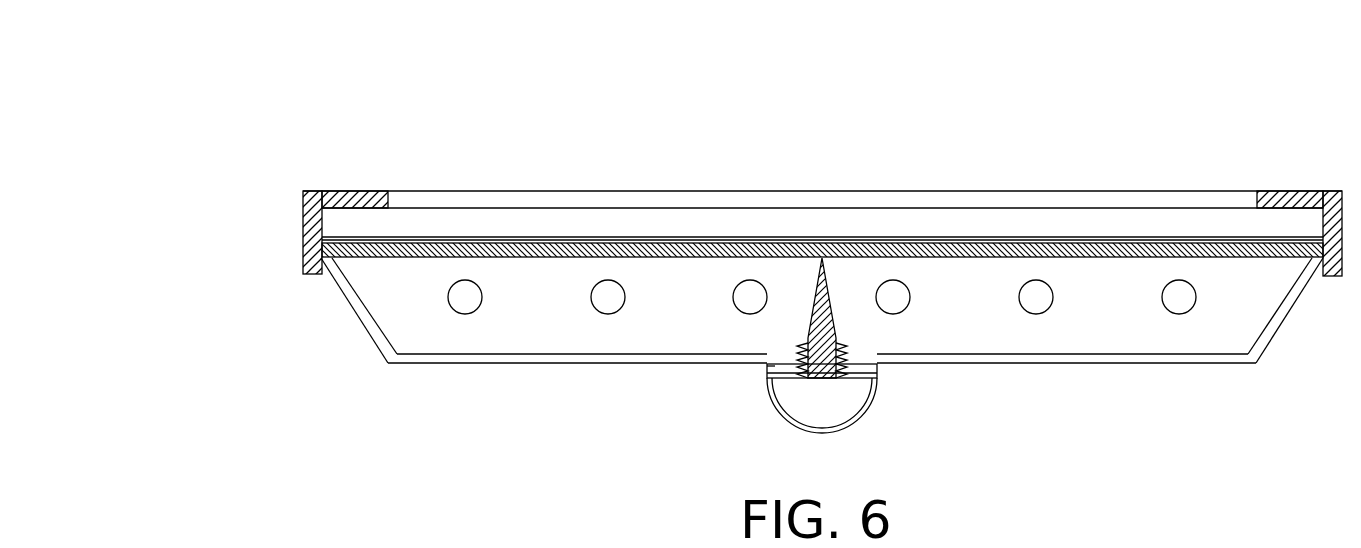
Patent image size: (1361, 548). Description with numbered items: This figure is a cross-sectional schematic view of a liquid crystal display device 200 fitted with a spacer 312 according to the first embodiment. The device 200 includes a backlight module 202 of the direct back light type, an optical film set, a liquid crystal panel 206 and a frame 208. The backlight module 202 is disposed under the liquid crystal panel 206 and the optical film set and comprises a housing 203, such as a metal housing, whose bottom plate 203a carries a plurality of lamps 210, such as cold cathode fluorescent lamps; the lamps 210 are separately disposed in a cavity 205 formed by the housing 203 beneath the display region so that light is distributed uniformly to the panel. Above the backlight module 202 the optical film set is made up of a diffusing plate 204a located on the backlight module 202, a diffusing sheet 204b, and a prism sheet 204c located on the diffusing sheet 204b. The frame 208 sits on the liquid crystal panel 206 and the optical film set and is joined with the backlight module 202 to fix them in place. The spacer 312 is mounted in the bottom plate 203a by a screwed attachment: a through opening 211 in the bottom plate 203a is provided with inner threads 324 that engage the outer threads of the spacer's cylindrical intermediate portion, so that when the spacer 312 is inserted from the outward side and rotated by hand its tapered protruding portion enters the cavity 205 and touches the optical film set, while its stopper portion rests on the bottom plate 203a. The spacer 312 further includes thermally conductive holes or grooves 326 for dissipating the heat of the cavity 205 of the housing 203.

The liquid crystal display device 200 is at (218, 88).
The backlight module 202 is at (338, 292).
The housing 203 is at (383, 348).
The bottom plate 203a is at (562, 354).
The diffusing plate 204a is at (320, 250).
The diffusing sheet 204b is at (332, 243).
The prism sheet 204c is at (325, 238).
The cavity 205 is at (380, 322).
The liquid crystal panel 206 is at (315, 203).
The frame 208 is at (306, 197).
The lamps 210 is at (608, 297).
The through opening 211 is at (875, 368).
The spacer 312 is at (857, 405).
The inner threads 324 is at (757, 370).
The thermally conductive holes or grooves 326 is at (838, 312).